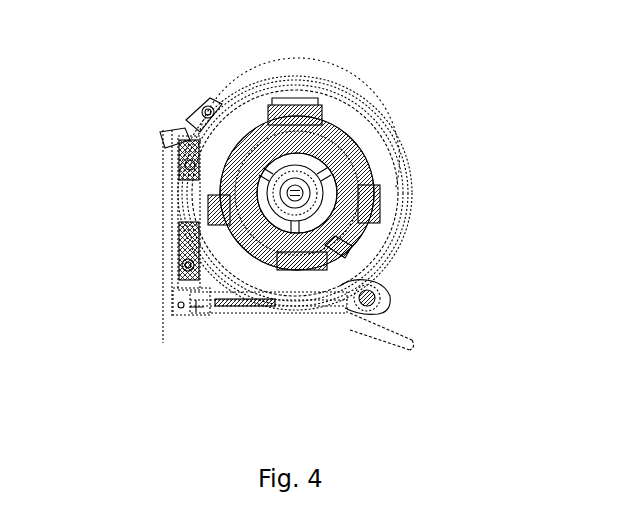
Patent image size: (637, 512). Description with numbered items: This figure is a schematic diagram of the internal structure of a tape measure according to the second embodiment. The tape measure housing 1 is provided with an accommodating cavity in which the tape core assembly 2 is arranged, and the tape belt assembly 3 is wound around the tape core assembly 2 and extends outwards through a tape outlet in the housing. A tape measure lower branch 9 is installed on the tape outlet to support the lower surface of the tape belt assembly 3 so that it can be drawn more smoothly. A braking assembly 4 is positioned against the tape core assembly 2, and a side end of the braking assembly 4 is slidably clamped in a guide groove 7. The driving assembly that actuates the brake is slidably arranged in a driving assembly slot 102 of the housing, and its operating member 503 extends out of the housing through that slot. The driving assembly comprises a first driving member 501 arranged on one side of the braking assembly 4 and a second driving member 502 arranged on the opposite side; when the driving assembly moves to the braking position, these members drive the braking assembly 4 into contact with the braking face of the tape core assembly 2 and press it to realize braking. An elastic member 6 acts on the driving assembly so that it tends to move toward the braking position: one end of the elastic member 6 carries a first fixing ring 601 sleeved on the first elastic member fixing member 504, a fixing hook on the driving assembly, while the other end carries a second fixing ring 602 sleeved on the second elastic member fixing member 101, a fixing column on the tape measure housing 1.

The tape measure housing 1 is at (205, 108).
The tape core assembly 2 is at (362, 130).
The tape belt assembly 3 is at (183, 290).
The braking assembly 4 is at (205, 182).
The elastic member 6 is at (185, 268).
The guide groove 7 is at (243, 118).
The tape measure lower branch 9 is at (190, 312).
The second elastic member fixing member 101 is at (200, 312).
The driving assembly slot 102 is at (195, 122).
The first driving member 501 is at (163, 190).
The second driving member 502 is at (190, 215).
The operating member 503 is at (163, 143).
The first elastic member fixing member 504 is at (335, 256).
The first fixing ring 601 is at (390, 296).
The second fixing ring 602 is at (330, 320).